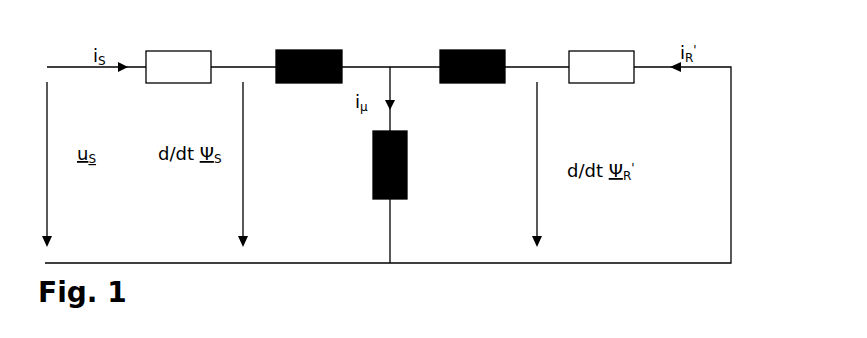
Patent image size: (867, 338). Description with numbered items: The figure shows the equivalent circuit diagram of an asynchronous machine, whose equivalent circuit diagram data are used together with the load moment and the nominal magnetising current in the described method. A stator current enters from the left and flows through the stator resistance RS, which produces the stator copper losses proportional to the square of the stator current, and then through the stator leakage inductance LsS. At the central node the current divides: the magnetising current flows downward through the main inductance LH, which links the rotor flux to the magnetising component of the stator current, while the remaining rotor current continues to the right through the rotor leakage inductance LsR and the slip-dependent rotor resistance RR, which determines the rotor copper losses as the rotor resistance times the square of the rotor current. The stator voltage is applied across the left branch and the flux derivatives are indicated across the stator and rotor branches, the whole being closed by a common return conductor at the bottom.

The stator resistance RS is at (178, 55).
The stator leakage inductance LsS is at (309, 55).
The rotor leakage inductance LsR is at (472, 55).
The rotor resistance RR is at (601, 55).
The main inductance LH is at (372, 165).